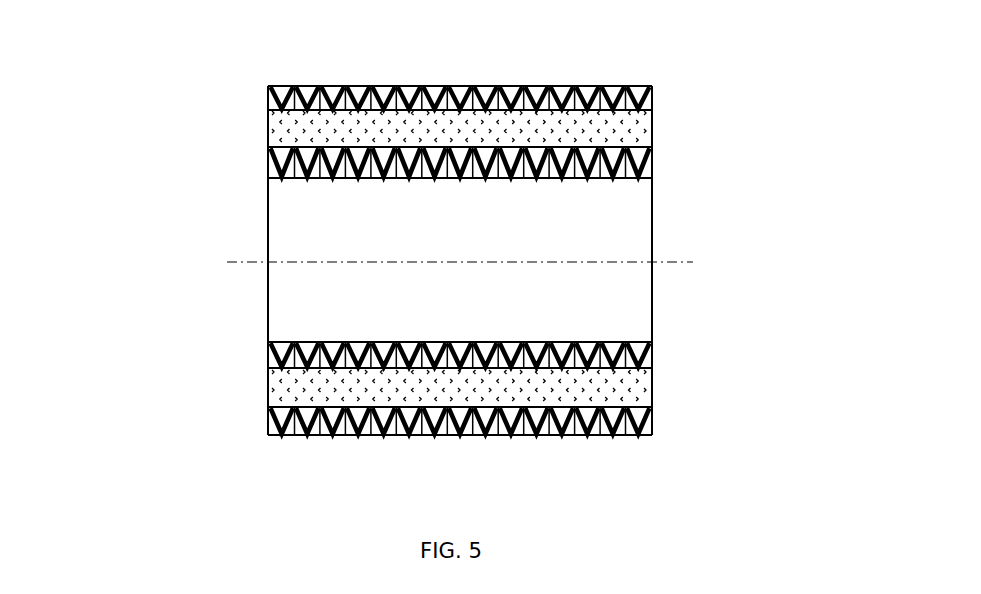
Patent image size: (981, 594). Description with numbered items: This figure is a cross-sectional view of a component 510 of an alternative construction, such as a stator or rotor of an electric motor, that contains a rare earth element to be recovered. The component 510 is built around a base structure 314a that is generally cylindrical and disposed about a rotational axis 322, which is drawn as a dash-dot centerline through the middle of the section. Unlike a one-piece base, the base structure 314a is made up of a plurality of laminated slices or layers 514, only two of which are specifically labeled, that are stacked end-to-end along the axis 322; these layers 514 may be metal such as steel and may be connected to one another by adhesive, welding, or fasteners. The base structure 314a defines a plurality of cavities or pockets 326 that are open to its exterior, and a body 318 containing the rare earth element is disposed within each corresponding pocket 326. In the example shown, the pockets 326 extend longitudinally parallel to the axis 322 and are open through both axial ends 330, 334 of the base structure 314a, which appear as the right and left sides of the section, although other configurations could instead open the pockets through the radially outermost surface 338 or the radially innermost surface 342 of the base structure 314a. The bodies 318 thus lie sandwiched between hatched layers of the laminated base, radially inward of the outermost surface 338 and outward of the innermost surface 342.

The component 510 is at (192, 80).
The radially outermost surface 338 is at (510, 86).
The body 318 is at (340, 132).
The pocket 326 is at (415, 110).
The radially innermost surface 342 is at (338, 340).
The laminated layer 514 is at (639, 87).
The axial end 330 is at (652, 227).
The axial end 334 is at (268, 205).
The rotational axis 322 is at (245, 262).
The base structure 314a is at (524, 445).